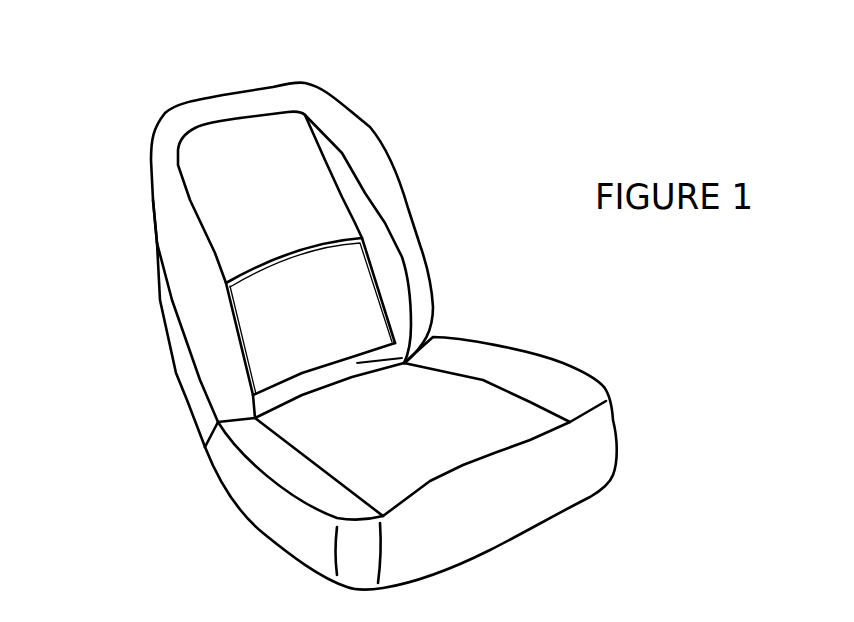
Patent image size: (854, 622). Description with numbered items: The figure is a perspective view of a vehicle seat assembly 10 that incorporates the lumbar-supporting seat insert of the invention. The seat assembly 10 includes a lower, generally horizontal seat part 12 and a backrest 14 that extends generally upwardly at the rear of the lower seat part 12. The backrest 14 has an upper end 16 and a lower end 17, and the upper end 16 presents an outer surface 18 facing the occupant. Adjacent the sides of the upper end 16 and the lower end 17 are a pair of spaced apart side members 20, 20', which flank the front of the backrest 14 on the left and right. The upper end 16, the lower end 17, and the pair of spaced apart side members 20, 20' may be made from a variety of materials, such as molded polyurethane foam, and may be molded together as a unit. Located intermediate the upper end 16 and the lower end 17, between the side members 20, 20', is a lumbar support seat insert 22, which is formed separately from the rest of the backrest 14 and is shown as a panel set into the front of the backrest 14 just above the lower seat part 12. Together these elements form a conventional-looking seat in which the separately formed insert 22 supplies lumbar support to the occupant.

The vehicle seat assembly 10 is at (147, 373).
The lower seat part 12 is at (475, 417).
The backrest 14 is at (175, 420).
The upper end 16 is at (302, 82).
The lower end 17 is at (428, 336).
The outer surface 18 is at (280, 170).
The side member 20 is at (124, 247).
The side member 20' is at (407, 239).
The lumbar support seat insert 22 is at (332, 320).